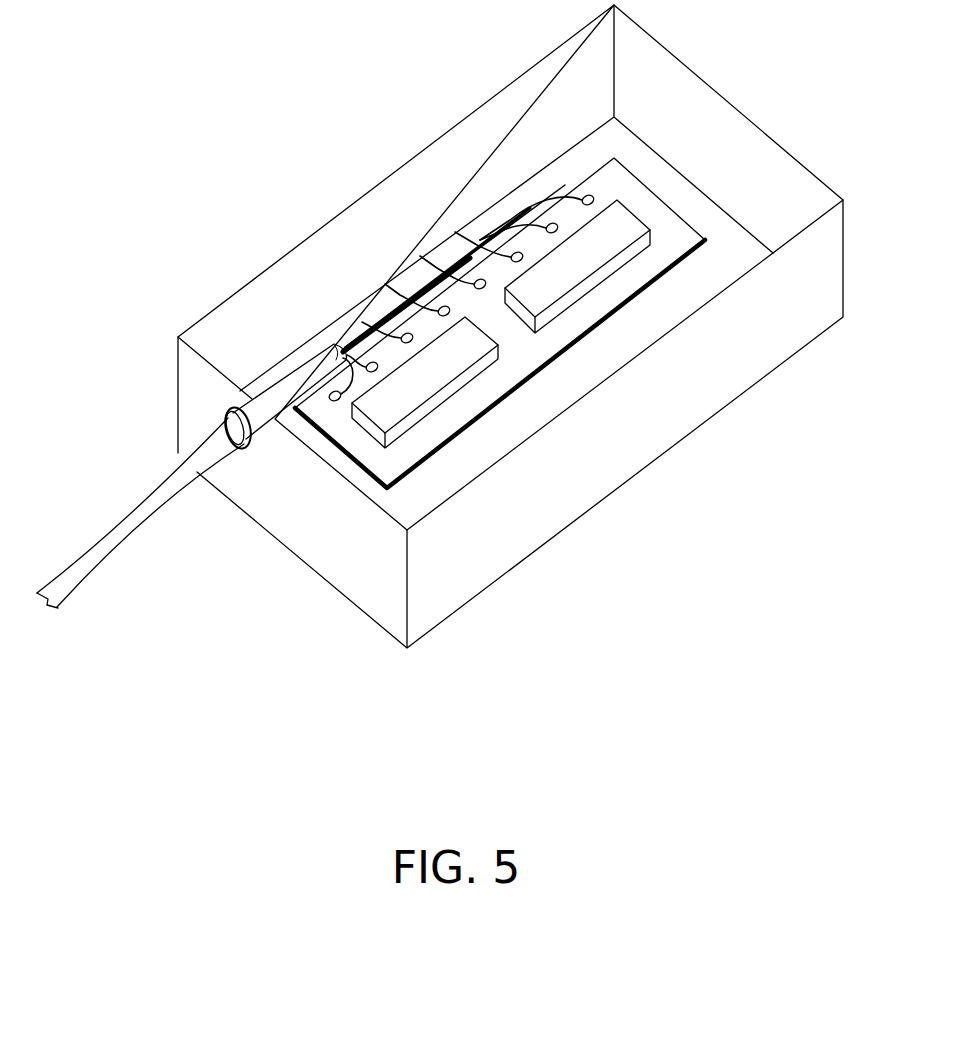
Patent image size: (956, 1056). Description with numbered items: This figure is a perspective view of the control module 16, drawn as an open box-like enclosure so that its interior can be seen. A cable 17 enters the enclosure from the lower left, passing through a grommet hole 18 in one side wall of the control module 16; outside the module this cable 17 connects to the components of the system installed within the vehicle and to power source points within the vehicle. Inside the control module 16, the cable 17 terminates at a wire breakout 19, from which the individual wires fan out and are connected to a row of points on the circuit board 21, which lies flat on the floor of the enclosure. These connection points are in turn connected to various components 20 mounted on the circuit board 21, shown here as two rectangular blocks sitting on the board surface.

The control module 16 is at (612, 455).
The cable 17 is at (125, 517).
The grommet hole 18 is at (250, 442).
The wire breakout 19 is at (357, 335).
The components 20 is at (383, 410).
The circuit board 21 is at (647, 220).